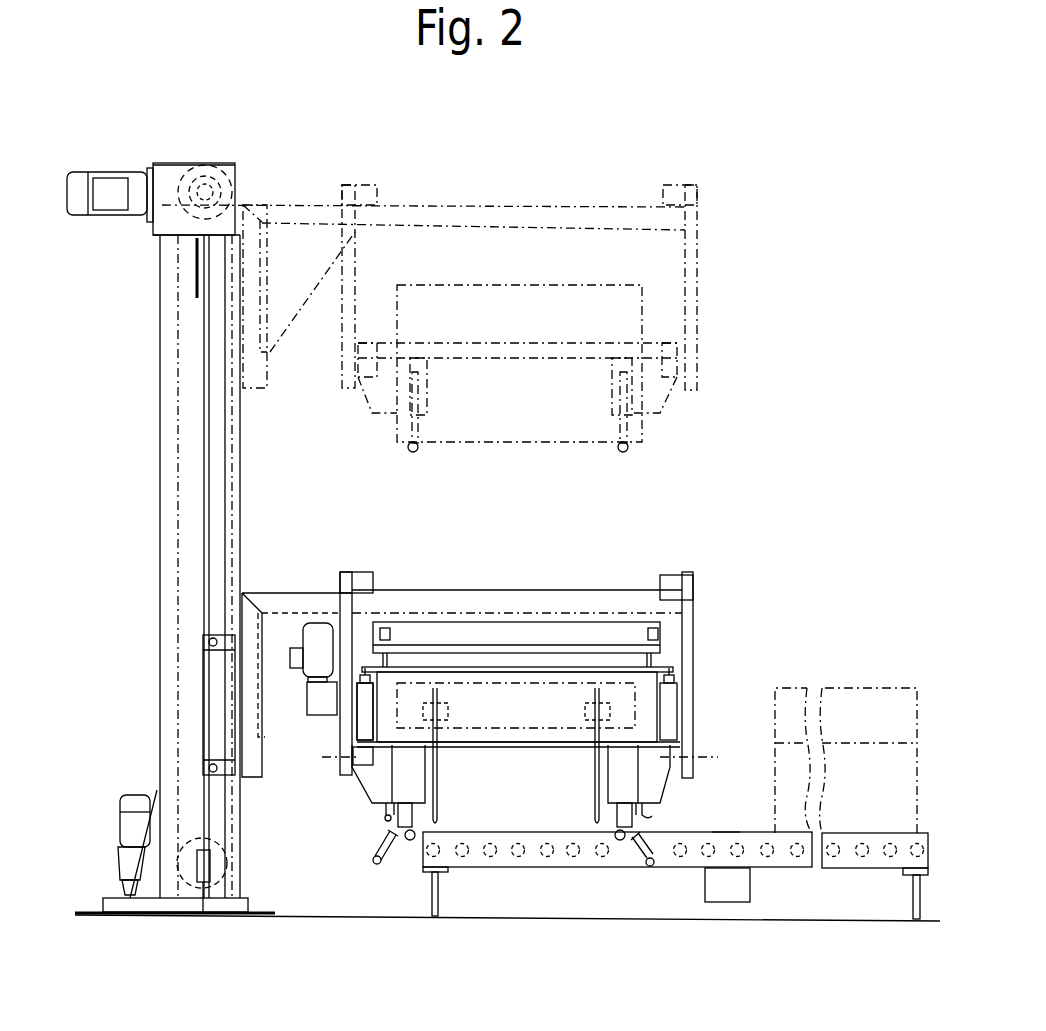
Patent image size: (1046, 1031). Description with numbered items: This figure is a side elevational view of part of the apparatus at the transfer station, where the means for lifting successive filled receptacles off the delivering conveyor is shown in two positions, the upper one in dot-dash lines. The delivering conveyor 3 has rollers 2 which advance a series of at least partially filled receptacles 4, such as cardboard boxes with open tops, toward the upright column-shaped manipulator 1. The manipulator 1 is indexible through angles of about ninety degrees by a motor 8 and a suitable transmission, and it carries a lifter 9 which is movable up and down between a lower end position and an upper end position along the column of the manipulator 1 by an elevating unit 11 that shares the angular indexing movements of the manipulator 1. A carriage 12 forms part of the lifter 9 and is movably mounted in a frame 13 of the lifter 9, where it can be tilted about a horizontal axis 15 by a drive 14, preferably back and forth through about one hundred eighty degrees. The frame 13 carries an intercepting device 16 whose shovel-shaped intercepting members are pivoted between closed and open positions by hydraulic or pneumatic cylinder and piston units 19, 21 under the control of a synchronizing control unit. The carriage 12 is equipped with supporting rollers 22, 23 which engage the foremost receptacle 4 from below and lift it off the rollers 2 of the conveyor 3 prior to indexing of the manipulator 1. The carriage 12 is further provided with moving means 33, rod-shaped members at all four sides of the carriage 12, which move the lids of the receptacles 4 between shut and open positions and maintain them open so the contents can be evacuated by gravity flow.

The manipulator 1 is at (152, 433).
The rollers 2 is at (575, 855).
The delivering conveyor 3 is at (723, 833).
The receptacles 4 is at (840, 688).
The motor 8 is at (128, 808).
The lifter 9 is at (502, 605).
The elevating unit 11 is at (195, 213).
The carriage 12 is at (553, 678).
The frame 13 is at (267, 737).
The drive 14 is at (313, 630).
The horizontal axis 15 is at (322, 757).
The intercepting device 16 is at (423, 625).
The cylinder and piston unit 19 is at (368, 715).
The cylinder and piston unit 21 is at (667, 705).
The supporting roller 22 is at (378, 858).
The supporting roller 23 is at (650, 862).
The moving means 33 is at (595, 798).